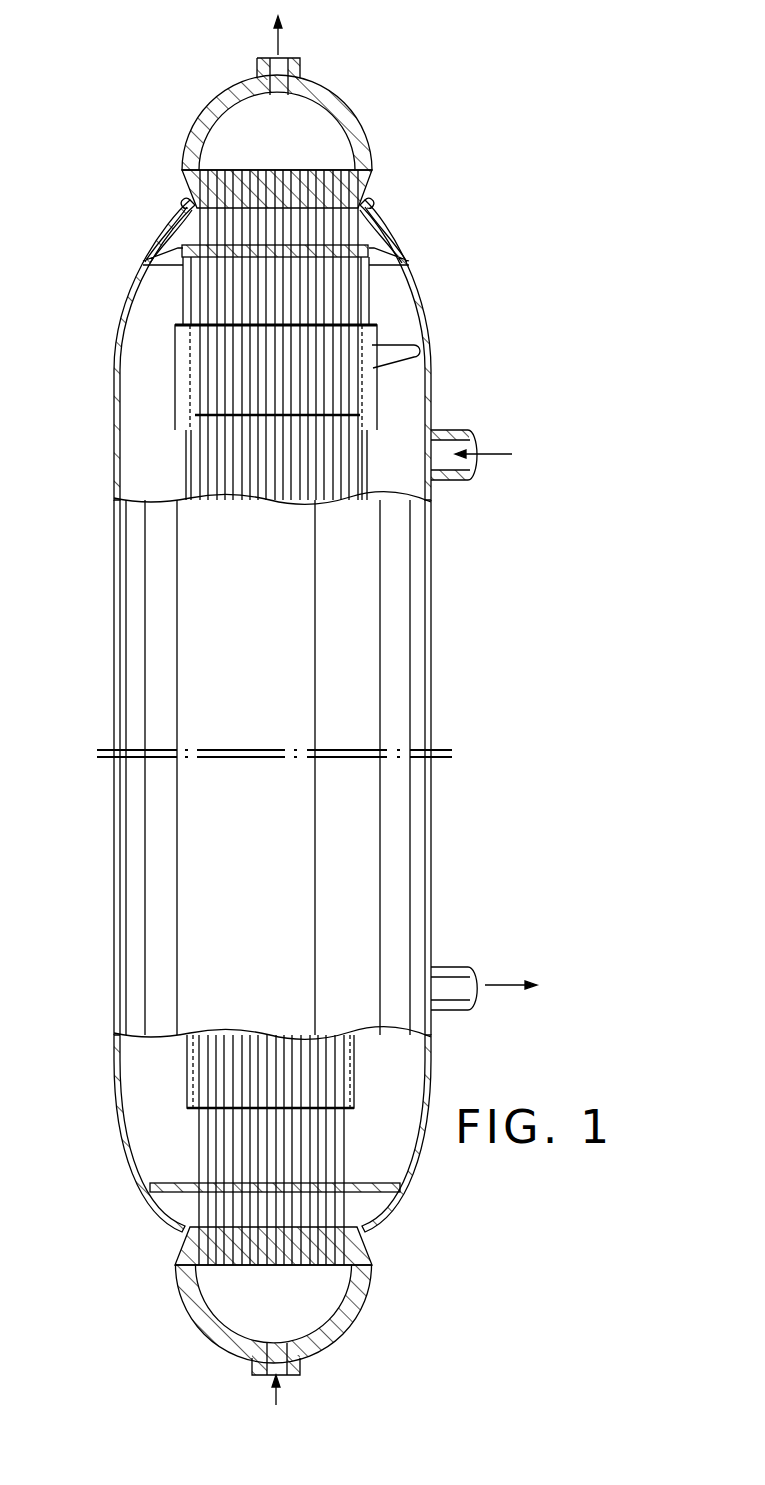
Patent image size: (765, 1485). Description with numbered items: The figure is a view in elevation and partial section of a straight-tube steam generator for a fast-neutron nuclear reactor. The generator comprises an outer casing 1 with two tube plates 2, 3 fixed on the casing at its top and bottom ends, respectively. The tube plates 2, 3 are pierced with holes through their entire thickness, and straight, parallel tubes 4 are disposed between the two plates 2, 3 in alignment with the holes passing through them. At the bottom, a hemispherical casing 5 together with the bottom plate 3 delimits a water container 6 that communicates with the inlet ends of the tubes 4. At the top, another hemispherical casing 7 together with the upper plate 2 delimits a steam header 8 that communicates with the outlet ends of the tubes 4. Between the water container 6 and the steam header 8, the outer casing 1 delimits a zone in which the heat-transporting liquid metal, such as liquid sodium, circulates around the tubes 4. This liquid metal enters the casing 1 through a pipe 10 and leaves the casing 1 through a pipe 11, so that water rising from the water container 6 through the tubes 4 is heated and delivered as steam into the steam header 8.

The outer casing 1 is at (416, 672).
The tube plate 2 is at (368, 182).
The tube plate 3 is at (362, 1252).
The tubes 4 is at (322, 1165).
The hemispherical casing 5 is at (340, 1327).
The water container 6 is at (285, 1314).
The hemispherical casing 7 is at (350, 121).
The steam header 8 is at (290, 144).
The pipe 10 is at (462, 430).
The pipe 11 is at (462, 967).